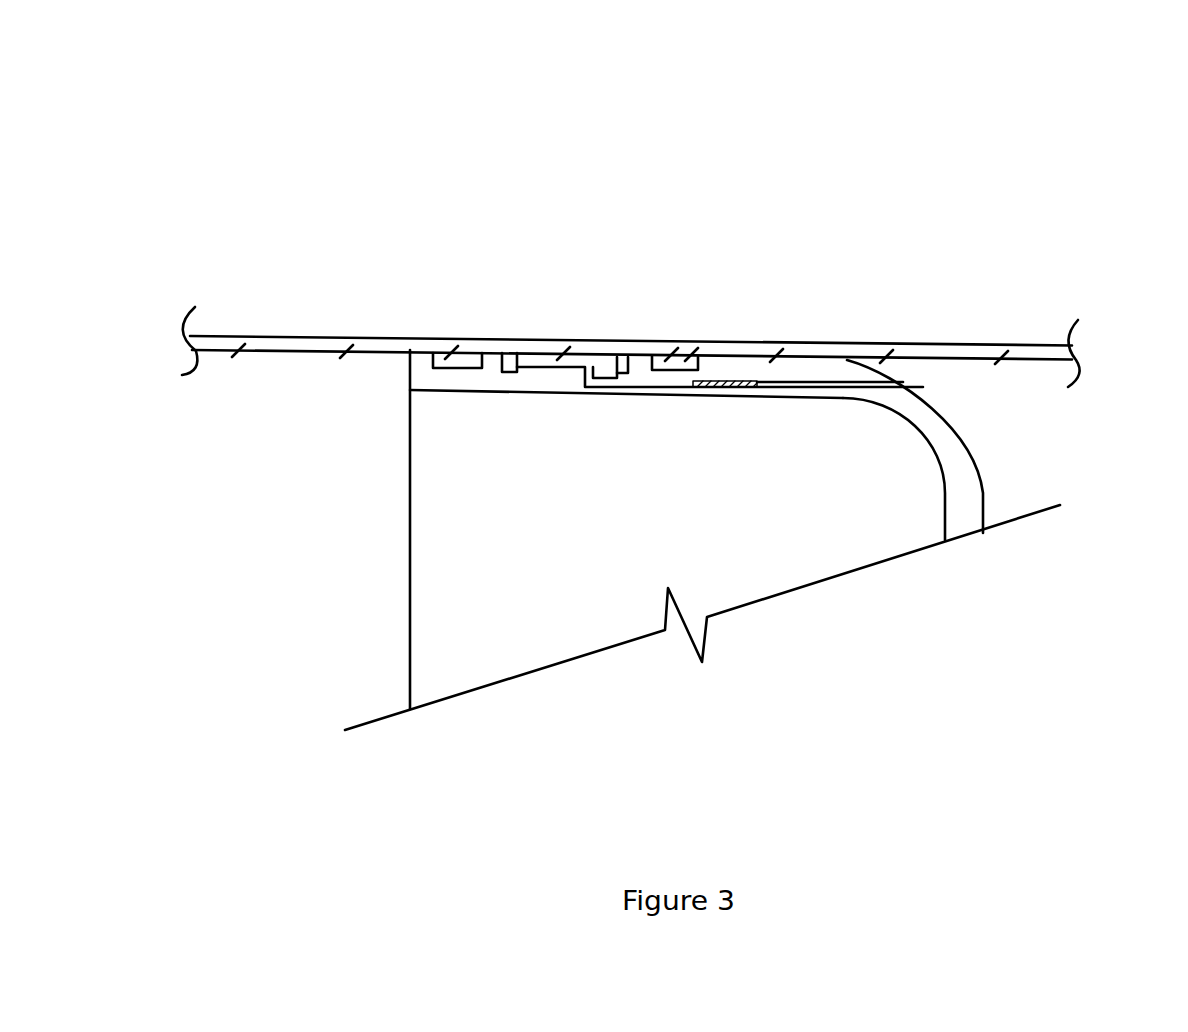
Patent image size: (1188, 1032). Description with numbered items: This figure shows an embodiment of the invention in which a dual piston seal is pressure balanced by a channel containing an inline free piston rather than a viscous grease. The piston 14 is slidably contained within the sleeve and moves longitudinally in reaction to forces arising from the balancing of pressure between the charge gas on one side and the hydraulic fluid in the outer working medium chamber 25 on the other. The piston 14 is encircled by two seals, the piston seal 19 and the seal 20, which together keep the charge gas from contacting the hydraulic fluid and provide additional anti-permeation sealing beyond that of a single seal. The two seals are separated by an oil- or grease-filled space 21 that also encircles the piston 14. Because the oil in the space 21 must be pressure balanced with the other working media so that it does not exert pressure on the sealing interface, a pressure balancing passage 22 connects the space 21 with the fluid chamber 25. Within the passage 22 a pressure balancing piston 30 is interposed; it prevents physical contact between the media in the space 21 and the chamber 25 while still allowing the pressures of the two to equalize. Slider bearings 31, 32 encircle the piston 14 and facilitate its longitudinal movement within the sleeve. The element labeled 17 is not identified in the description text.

The piston 14 is at (427, 378).
The base body 17 is at (542, 550).
The piston seal 19 is at (512, 362).
The seal 20 is at (624, 362).
The oil-filled space 21 is at (564, 356).
The pressure balancing passage 22 is at (810, 387).
The outer working medium chamber 25 is at (980, 385).
The pressure balancing piston 30 is at (733, 382).
The slider bearing 31 is at (460, 362).
The slider bearing 32 is at (677, 362).